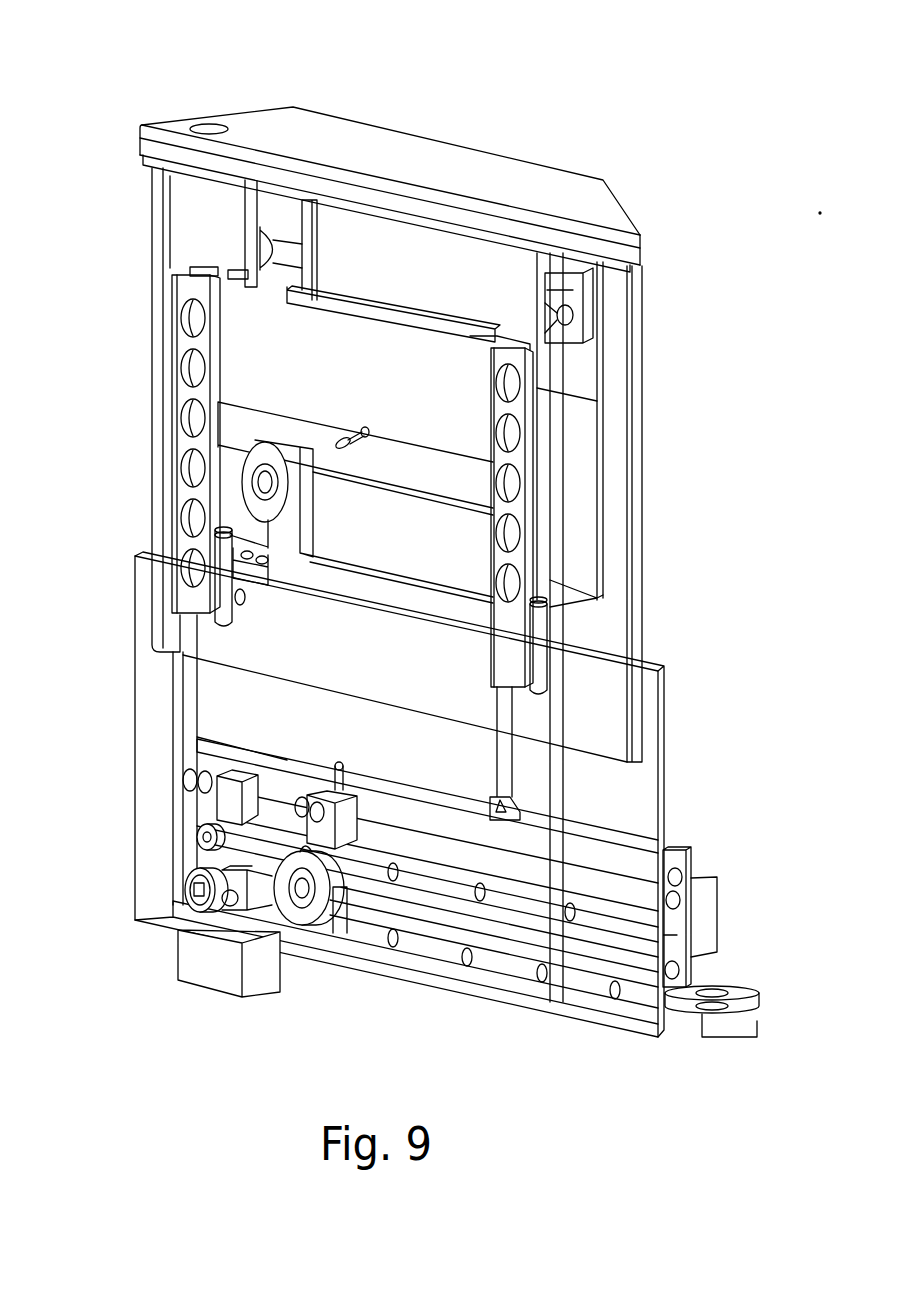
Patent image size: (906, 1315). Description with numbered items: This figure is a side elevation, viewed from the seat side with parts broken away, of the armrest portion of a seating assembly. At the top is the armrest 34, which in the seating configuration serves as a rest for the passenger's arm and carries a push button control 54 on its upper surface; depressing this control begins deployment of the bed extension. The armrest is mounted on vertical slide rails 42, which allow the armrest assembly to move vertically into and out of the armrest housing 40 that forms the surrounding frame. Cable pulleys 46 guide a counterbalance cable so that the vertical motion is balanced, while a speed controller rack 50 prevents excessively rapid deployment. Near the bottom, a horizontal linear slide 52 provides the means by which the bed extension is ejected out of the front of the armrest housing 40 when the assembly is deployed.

The armrest 34 is at (572, 188).
The push button control 54 is at (202, 122).
The armrest housing 40 is at (150, 450).
The vertical slide rail 42 is at (185, 342).
The cable pulley 46 is at (267, 887).
The speed controller rack 50 is at (595, 957).
The horizontal linear slide 52 is at (612, 915).